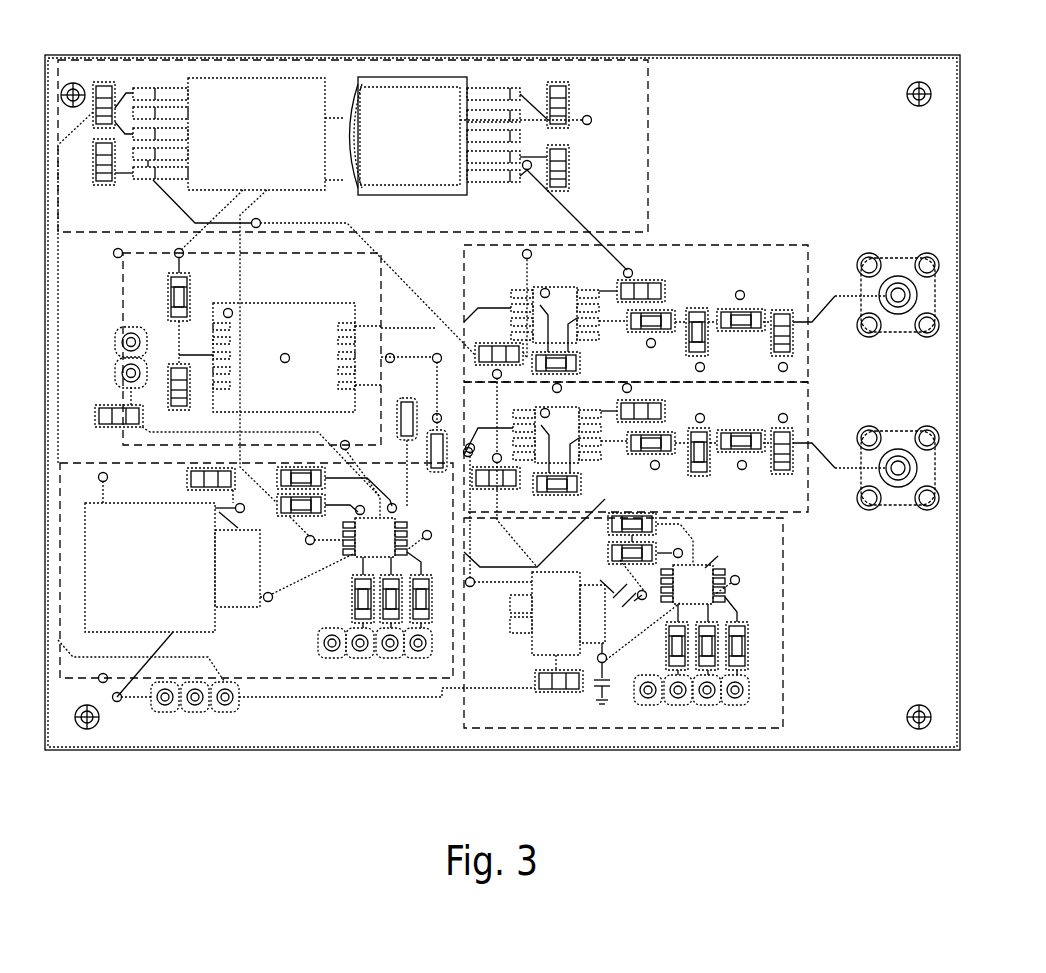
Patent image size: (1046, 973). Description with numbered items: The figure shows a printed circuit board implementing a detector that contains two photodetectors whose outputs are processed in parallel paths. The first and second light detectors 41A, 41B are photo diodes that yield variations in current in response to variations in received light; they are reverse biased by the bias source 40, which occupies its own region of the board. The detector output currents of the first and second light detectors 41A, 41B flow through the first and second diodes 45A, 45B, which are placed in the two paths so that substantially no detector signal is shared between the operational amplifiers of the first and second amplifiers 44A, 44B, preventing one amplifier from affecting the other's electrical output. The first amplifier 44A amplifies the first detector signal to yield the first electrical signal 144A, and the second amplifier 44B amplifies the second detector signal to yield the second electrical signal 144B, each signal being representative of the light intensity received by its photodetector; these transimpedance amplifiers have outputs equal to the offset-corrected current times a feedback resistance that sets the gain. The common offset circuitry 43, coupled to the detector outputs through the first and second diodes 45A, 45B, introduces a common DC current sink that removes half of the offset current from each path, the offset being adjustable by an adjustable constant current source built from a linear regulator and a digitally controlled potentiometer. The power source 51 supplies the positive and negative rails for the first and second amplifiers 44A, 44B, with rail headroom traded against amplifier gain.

The power source 51 is at (650, 133).
The first light detector 41A is at (267, 379).
The second light detector 41B is at (382, 345).
The first diode 45A is at (407, 405).
The second diode 45B is at (428, 468).
The first amplifier 44A is at (770, 245).
The second amplifier 44B is at (795, 512).
The first electrical signal 144A is at (900, 333).
The second electrical signal 144B is at (917, 498).
The bias source 40 is at (343, 682).
The common offset circuitry 43 is at (622, 730).